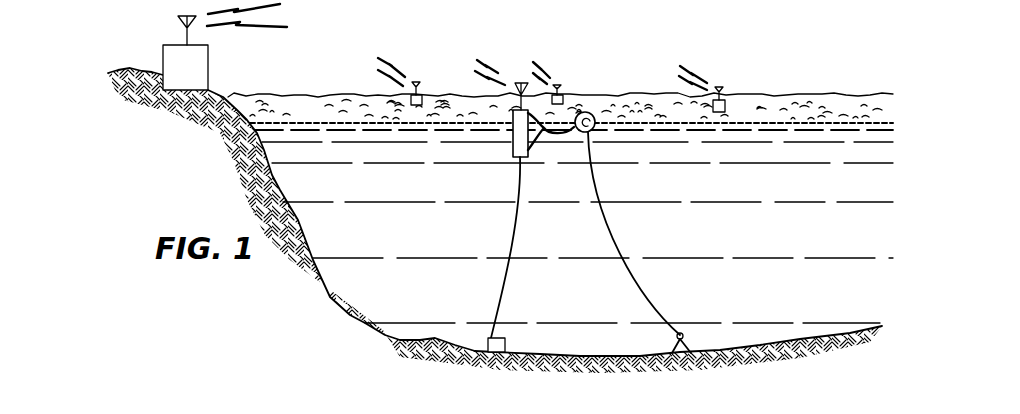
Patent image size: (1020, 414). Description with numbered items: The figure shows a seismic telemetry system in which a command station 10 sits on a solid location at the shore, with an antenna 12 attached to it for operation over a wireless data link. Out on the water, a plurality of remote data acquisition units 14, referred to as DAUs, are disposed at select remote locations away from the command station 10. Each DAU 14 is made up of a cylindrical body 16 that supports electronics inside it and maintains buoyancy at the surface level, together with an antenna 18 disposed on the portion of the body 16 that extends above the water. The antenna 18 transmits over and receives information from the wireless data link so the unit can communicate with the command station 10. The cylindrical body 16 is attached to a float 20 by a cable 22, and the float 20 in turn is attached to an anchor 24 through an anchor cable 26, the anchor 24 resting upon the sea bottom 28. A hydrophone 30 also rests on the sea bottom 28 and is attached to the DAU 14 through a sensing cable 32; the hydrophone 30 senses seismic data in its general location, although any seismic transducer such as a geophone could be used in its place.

The command station 10 is at (162, 58).
The antenna 12 is at (177, 21).
The remote data acquisition unit 14 is at (425, 92).
The cylindrical body 16 is at (514, 158).
The antenna 18 is at (520, 82).
The float 20 is at (591, 113).
The cable 22 is at (554, 138).
The anchor 24 is at (675, 350).
The anchor cable 26 is at (614, 240).
The sea bottom 28 is at (576, 352).
The hydrophone 30 is at (488, 346).
The sensing cable 32 is at (513, 241).